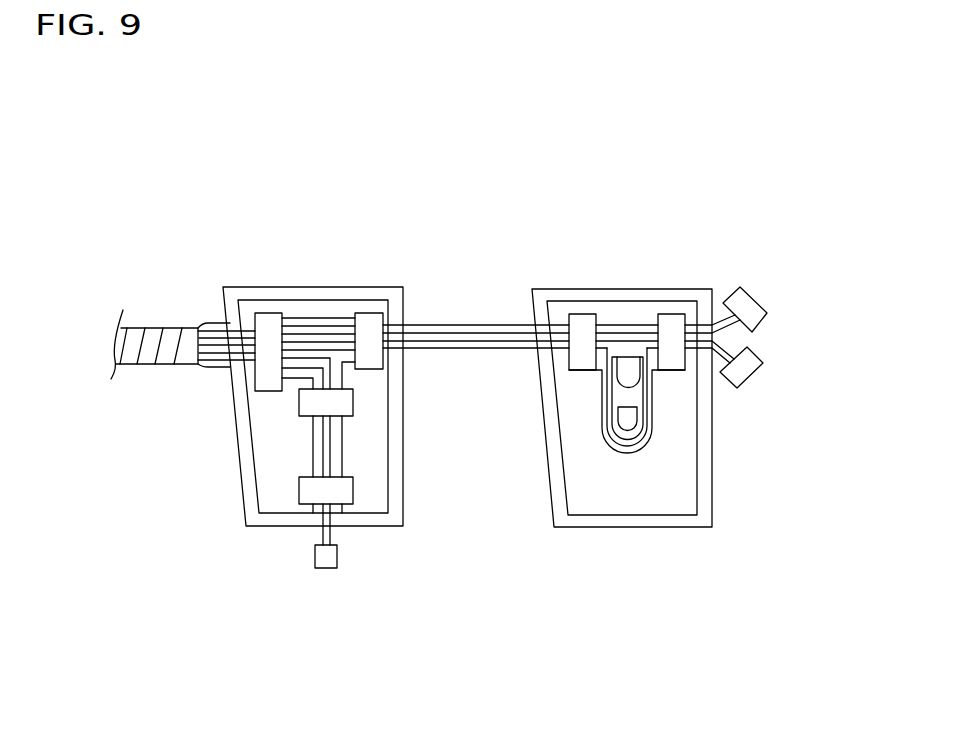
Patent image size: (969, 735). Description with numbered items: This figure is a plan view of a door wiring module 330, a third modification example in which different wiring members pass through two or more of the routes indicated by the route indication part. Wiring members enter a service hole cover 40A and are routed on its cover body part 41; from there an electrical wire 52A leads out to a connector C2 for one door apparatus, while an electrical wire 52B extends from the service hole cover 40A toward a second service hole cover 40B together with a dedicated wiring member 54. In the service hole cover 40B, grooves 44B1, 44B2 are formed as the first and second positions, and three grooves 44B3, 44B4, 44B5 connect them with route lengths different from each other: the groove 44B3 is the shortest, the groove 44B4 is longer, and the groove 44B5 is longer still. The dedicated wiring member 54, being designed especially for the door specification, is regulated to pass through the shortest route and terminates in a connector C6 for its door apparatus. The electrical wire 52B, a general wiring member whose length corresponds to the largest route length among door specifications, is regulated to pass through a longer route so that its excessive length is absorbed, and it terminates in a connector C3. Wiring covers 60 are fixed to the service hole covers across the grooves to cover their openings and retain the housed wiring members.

The door wiring module 330 is at (207, 178).
The service hole cover 40A is at (293, 287).
The service hole cover 40B is at (588, 289).
The cover body part 41 is at (680, 497).
The groove 44B1 is at (563, 314).
The groove 44B2 is at (692, 314).
The groove 44B3 is at (625, 322).
The groove 44B4 is at (650, 405).
The groove 44B5 is at (617, 450).
The electrical wire 52A is at (333, 534).
The electrical wire 52B is at (453, 349).
The dedicated wiring member 54 is at (462, 333).
The wiring cover 60 is at (578, 372).
The connector C2 is at (325, 568).
The connector C3 is at (760, 375).
The connector C6 is at (757, 296).